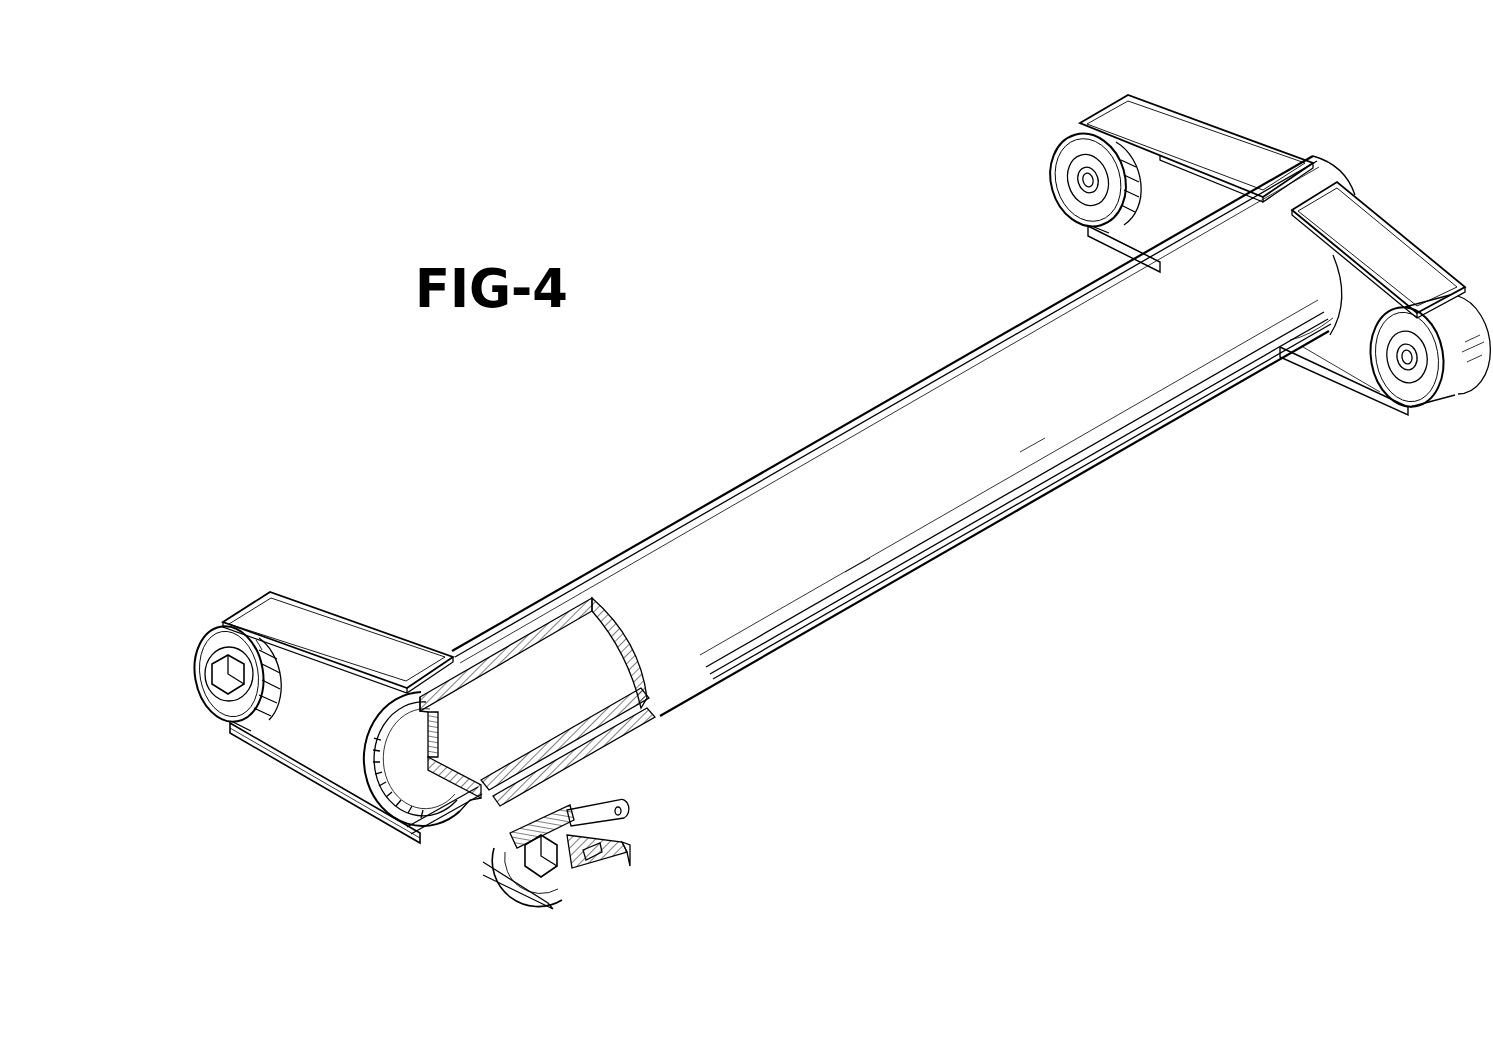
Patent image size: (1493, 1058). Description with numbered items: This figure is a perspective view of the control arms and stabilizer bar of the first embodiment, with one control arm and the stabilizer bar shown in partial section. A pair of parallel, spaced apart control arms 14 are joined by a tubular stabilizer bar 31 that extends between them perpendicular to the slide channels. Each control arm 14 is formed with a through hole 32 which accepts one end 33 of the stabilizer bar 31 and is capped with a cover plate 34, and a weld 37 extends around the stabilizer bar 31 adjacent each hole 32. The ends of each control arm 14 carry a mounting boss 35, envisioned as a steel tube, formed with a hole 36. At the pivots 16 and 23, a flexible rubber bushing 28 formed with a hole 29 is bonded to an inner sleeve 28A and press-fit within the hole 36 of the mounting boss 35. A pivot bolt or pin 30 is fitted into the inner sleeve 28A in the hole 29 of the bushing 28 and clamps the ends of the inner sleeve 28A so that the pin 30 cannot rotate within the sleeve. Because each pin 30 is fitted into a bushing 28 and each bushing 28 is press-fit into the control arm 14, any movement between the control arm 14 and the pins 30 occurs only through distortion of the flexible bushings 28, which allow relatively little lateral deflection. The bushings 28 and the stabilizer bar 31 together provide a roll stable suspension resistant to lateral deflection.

The control arm 14 is at (323, 737).
The pivot 16 is at (603, 888).
The pivot 23 is at (214, 633).
The flexible rubber bushing 28 is at (560, 818).
The inner sleeve 28A is at (512, 818).
The hole 29 is at (600, 827).
The pivot bolt or pin 30 is at (215, 678).
The tubular stabilizer bar 31 is at (790, 487).
The through hole 32 is at (483, 822).
The end 33 is at (423, 698).
The cover plate 34 is at (418, 787).
The mounting boss 35 is at (203, 653).
The hole 36 is at (225, 645).
The weld 37 is at (1338, 332).